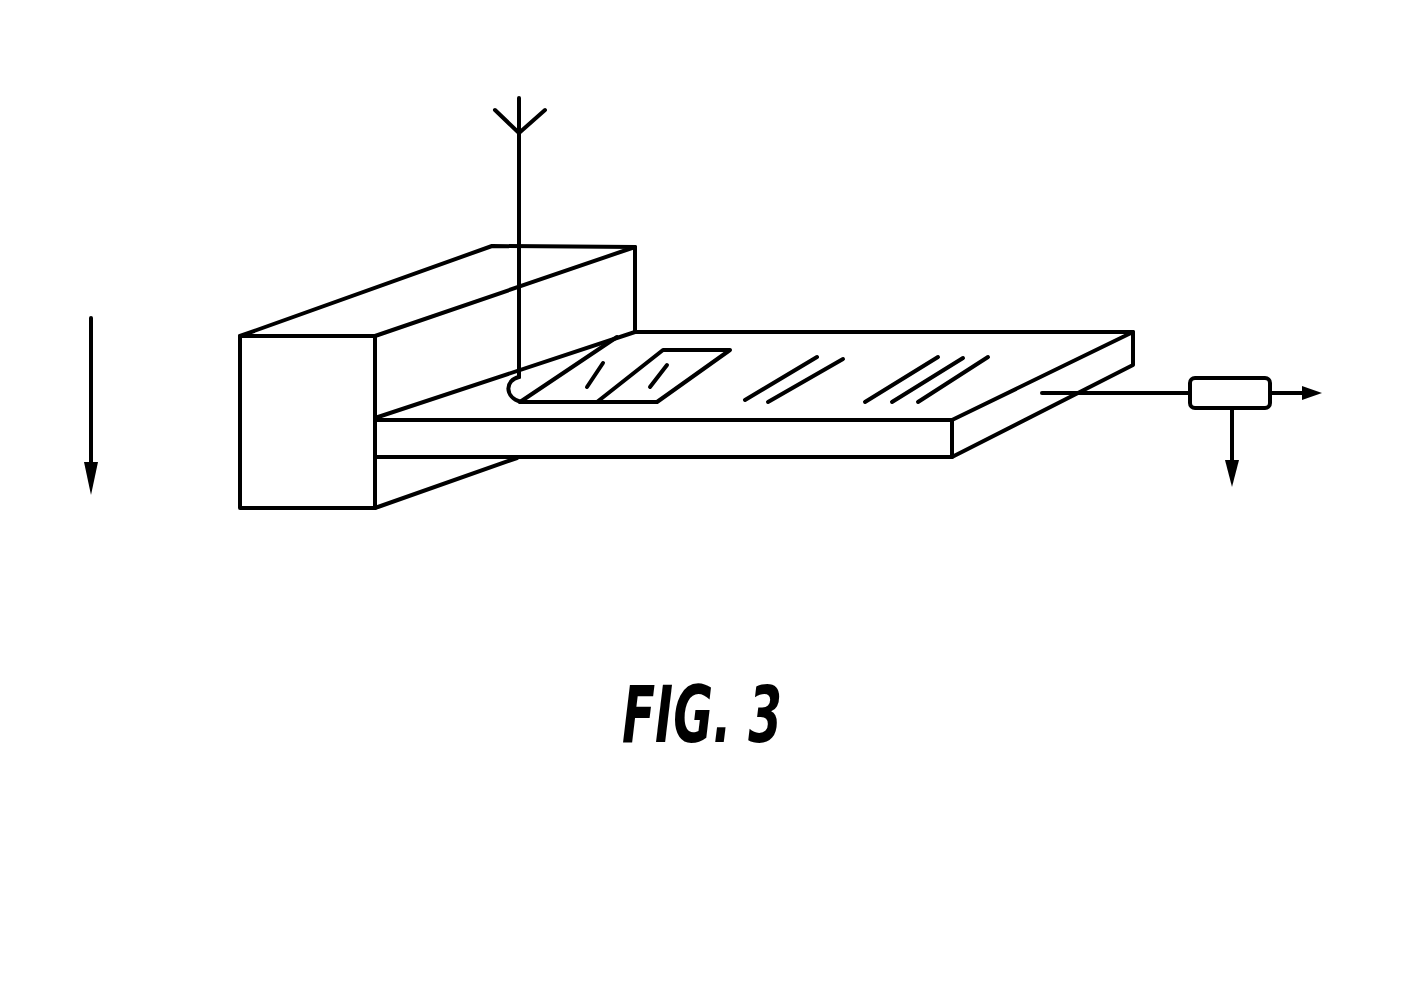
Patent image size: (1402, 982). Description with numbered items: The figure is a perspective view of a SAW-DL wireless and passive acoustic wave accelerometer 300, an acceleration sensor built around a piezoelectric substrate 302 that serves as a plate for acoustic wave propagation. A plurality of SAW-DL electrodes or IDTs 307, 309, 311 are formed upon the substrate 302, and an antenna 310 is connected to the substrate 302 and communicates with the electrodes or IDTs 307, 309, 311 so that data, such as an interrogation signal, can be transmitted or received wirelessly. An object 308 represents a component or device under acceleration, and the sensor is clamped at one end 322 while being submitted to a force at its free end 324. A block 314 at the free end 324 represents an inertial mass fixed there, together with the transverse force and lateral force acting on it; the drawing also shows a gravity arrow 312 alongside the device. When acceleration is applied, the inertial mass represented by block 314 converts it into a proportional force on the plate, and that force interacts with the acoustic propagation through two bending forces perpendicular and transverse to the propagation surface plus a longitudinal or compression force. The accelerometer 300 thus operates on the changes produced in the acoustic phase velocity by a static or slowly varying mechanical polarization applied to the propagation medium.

The SAW-DL wireless and passive acoustic wave accelerometer 300 is at (729, 325).
The piezoelectric substrate 302 is at (1115, 356).
The SAW-DL electrode or IDT 307 is at (744, 349).
The object 308 is at (617, 292).
The SAW-DL electrode or IDT 309 is at (864, 349).
The antenna 310 is at (519, 206).
The SAW-DL electrode or IDT 311 is at (987, 349).
The gravity vector 312 is at (91, 413).
The block 314 is at (1273, 420).
The clamped end 322 is at (408, 470).
The free end 324 is at (988, 475).